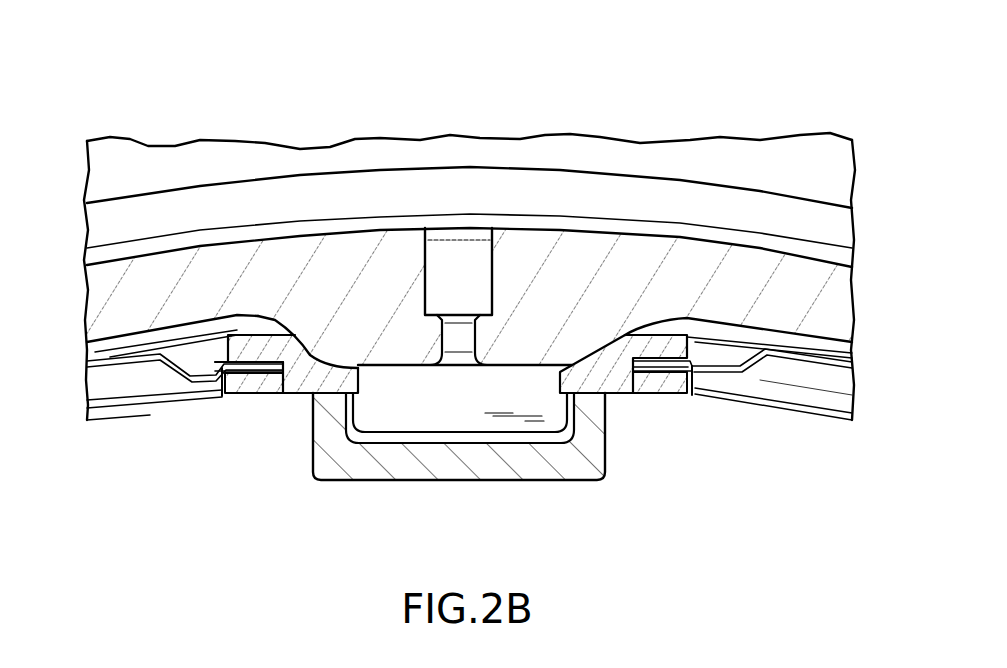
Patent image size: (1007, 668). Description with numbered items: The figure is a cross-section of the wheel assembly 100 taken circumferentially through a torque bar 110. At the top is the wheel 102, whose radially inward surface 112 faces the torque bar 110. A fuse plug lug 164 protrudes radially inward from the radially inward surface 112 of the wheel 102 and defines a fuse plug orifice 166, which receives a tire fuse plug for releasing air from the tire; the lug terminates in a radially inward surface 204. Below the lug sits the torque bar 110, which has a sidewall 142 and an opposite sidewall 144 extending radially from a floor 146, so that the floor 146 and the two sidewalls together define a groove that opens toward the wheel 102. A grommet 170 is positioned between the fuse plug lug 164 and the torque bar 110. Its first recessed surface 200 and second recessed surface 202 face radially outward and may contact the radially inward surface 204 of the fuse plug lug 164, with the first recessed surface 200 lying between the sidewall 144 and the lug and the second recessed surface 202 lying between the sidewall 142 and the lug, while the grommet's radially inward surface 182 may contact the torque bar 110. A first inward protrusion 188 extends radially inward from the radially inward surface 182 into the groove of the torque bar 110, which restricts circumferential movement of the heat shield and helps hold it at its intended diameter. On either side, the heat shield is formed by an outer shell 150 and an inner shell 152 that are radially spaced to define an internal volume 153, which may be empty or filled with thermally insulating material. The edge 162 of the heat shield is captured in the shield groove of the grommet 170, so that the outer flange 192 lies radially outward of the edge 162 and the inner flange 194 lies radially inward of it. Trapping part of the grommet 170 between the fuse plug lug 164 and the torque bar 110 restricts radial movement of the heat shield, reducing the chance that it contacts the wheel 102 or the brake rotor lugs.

The wheel assembly 100 is at (815, 80).
The wheel 102 is at (690, 271).
The torque bar 110 is at (270, 545).
The radially inward surface 112 is at (92, 344).
The sidewall 142 is at (346, 416).
The sidewall 144 is at (582, 413).
The floor 146 is at (440, 498).
The outer shell 150 is at (826, 357).
The inner shell 152 is at (790, 407).
The internal volume 153 is at (825, 388).
The edge 162 is at (656, 430).
The fuse plug lug 164 is at (410, 348).
The fuse plug orifice 166 is at (452, 270).
The grommet 170 is at (316, 357).
The radially inward surface 182 is at (290, 400).
The first inward protrusion 188 is at (433, 407).
The outer flange 192 is at (253, 355).
The inner flange 194 is at (680, 389).
The first recessed surface 200 is at (583, 362).
The second recessed surface 202 is at (346, 362).
The radially inward surface 204 is at (482, 367).